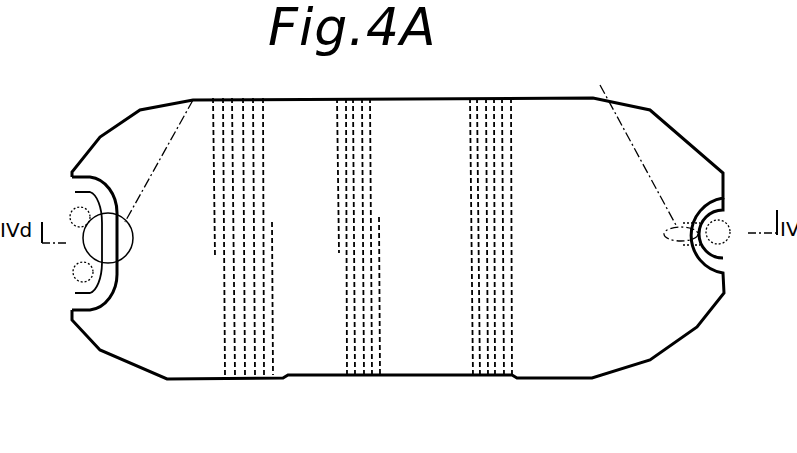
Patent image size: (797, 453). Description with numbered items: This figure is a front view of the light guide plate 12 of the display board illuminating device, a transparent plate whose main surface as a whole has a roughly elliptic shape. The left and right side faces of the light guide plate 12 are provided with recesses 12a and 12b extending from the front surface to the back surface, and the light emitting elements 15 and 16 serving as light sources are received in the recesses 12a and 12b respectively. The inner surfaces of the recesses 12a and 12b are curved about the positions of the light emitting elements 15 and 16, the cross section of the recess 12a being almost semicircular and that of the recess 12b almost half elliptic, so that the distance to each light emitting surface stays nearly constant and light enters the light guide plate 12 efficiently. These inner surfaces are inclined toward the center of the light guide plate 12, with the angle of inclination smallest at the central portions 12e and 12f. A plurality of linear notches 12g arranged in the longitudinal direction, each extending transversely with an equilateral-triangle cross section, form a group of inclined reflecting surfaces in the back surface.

The light guide plate 12 is at (660, 124).
The recess 12a is at (730, 209).
The recess 12b is at (100, 193).
The central portion 12e is at (600, 84).
The central portion 12f is at (193, 100).
The linear notches 12g is at (250, 379).
The light emitting element 15 is at (729, 243).
The light emitting element 16 is at (71, 210).